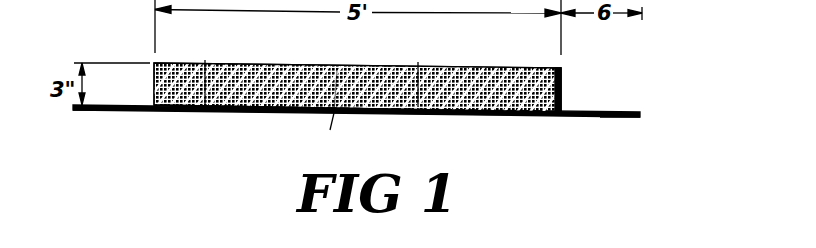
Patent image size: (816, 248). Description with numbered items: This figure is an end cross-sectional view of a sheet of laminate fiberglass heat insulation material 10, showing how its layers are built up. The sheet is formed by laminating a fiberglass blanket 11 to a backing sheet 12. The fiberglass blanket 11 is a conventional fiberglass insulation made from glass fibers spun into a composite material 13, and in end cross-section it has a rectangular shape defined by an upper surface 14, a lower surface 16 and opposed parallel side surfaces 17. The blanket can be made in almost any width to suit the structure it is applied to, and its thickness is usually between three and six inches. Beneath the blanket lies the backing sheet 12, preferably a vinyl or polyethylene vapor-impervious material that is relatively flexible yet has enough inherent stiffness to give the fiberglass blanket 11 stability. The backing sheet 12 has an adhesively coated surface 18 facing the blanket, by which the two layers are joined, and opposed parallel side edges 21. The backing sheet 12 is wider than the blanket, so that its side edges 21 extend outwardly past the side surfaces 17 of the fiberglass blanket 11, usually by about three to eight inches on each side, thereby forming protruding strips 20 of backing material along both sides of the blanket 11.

The fiberglass heat insulation material 10 is at (114, 31).
The fiberglass blanket 11 is at (490, 54).
The backing sheet 12 is at (436, 124).
The composite material 13 is at (560, 81).
The upper surface 14 is at (347, 43).
The lower surface 16 is at (418, 62).
The side surfaces 17 is at (153, 97).
The adhesively coated surface 18 is at (205, 60).
The protruding strips 20 is at (590, 126).
The side edges 21 is at (102, 111).